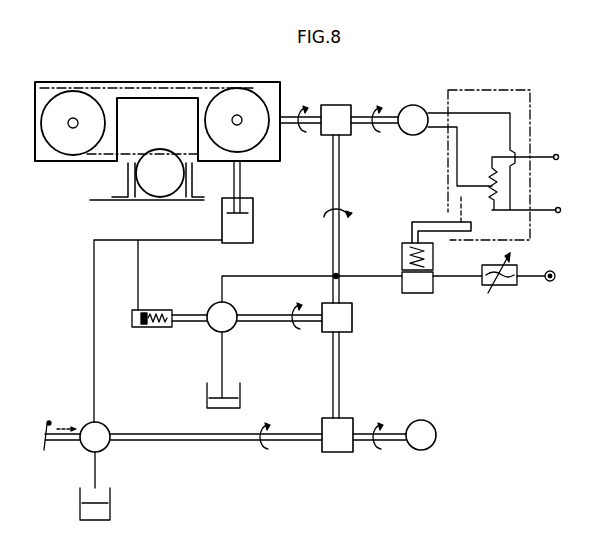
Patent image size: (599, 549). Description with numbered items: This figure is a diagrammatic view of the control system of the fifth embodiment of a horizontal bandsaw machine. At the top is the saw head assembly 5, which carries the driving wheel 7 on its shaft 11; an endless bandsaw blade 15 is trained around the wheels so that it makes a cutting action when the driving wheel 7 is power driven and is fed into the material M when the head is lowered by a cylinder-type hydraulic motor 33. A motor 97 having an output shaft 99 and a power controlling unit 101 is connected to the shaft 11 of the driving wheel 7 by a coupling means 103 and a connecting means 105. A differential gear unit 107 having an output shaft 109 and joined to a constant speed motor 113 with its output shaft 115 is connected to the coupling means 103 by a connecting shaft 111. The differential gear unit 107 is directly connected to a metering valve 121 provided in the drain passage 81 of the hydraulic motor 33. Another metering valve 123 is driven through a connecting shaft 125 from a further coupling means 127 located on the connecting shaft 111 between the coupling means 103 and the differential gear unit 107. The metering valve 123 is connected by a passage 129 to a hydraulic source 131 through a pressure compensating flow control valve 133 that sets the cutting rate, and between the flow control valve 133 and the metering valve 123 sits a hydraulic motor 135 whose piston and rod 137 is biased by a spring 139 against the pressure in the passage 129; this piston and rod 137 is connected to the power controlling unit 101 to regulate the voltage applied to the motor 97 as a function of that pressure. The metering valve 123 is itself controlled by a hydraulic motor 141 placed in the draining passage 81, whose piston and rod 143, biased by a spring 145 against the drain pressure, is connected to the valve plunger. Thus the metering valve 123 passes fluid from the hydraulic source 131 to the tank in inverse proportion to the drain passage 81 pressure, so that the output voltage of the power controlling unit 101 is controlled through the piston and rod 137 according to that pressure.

The saw head assembly 5 is at (205, 82).
The driving wheel 7 is at (258, 95).
The shaft 11 is at (238, 115).
The bandsaw blade 15 is at (153, 88).
The material M is at (143, 178).
The hydraulic motor 33 is at (253, 232).
The drain passage 81 is at (165, 238).
The motor 97 is at (420, 106).
The output shaft 99 is at (392, 104).
The power controlling unit 101 is at (495, 90).
The coupling means 103 is at (325, 130).
The connecting means 105 is at (312, 103).
The differential gear unit 107 is at (332, 452).
The output shaft 109 is at (200, 445).
The connecting shaft 111 is at (337, 166).
The constant speed motor 113 is at (436, 428).
The output shaft 115 is at (392, 446).
The metering valve 121 is at (88, 422).
The metering valve 123 is at (236, 310).
The connecting shaft 125 is at (267, 325).
The coupling means 127 is at (328, 332).
The passage 129 is at (303, 274).
The hydraulic source 131 is at (552, 282).
The flow control valve 133 is at (500, 287).
The hydraulic motor 135 is at (416, 294).
The piston and rod 137 is at (428, 221).
The spring 139 is at (400, 249).
The hydraulic motor 141 is at (148, 327).
The piston and rod 143 is at (179, 325).
The spring 145 is at (160, 310).